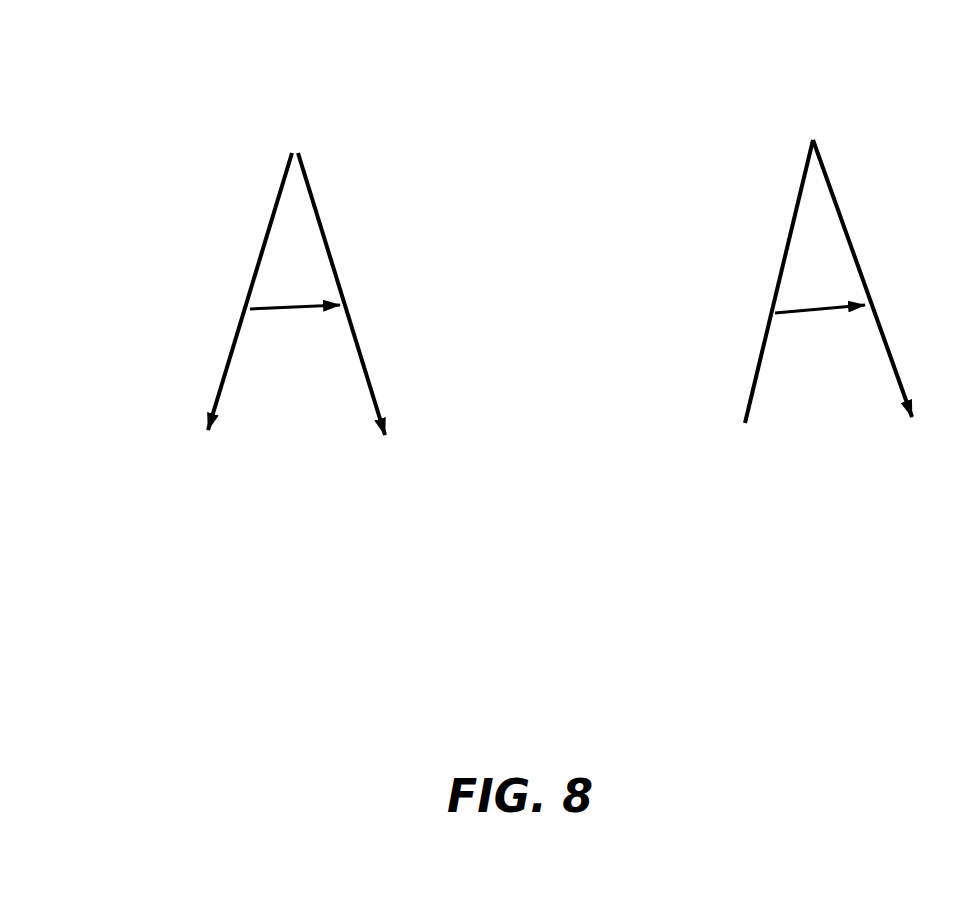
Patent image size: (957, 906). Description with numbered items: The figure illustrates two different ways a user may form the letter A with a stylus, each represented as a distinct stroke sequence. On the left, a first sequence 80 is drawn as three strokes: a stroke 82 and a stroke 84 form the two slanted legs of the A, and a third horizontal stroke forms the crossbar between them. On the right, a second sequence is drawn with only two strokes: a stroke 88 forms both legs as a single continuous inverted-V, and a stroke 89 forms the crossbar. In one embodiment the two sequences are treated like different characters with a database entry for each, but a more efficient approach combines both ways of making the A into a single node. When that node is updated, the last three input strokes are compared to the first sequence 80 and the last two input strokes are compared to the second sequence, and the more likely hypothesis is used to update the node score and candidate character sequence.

The first sequence 80 is at (183, 110).
The stroke 82 is at (258, 252).
The stroke 84 is at (330, 252).
The stroke 88 is at (787, 245).
The stroke 89 is at (817, 313).